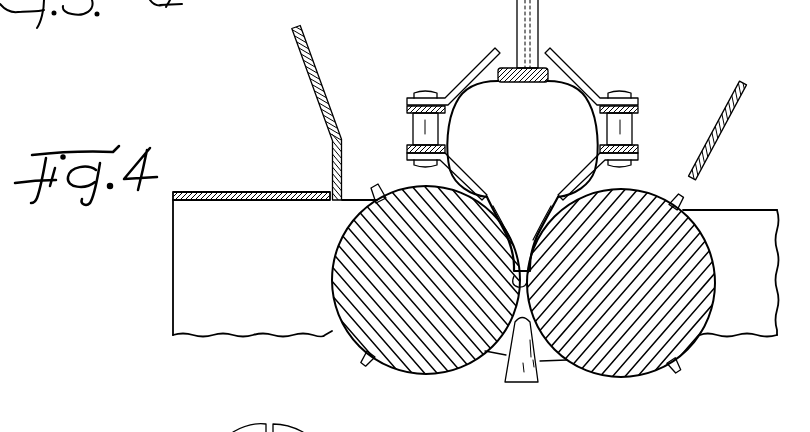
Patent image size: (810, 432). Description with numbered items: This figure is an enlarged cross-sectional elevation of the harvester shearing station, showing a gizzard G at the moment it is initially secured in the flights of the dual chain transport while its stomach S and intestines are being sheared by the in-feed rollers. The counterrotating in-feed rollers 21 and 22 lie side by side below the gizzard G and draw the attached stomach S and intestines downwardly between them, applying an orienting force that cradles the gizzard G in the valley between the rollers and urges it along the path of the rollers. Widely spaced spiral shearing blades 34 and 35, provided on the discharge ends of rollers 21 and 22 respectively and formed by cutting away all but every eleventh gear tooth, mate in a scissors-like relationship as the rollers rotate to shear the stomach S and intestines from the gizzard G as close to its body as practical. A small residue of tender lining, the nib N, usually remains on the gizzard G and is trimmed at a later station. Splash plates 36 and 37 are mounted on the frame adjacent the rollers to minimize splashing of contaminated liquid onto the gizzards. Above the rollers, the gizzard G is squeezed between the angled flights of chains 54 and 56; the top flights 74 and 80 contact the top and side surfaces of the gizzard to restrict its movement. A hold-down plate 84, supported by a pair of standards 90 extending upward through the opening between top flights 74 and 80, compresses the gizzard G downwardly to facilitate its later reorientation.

The in-feed roller 21 is at (700, 297).
The in-feed roller 22 is at (337, 270).
The spiral shearing blade 34 is at (688, 200).
The spiral shearing blade 35 is at (376, 186).
The splash plate 36 is at (311, 89).
The splash plate 37 is at (724, 128).
The chain 54 is at (645, 131).
The chain 56 is at (412, 129).
The top flight 74 is at (574, 72).
The top flight 80 is at (478, 67).
The hold-down plate 84 is at (548, 62).
The standard 90 is at (517, 13).
The gizzard G is at (535, 149).
The nib N is at (522, 236).
The stomach S is at (524, 384).